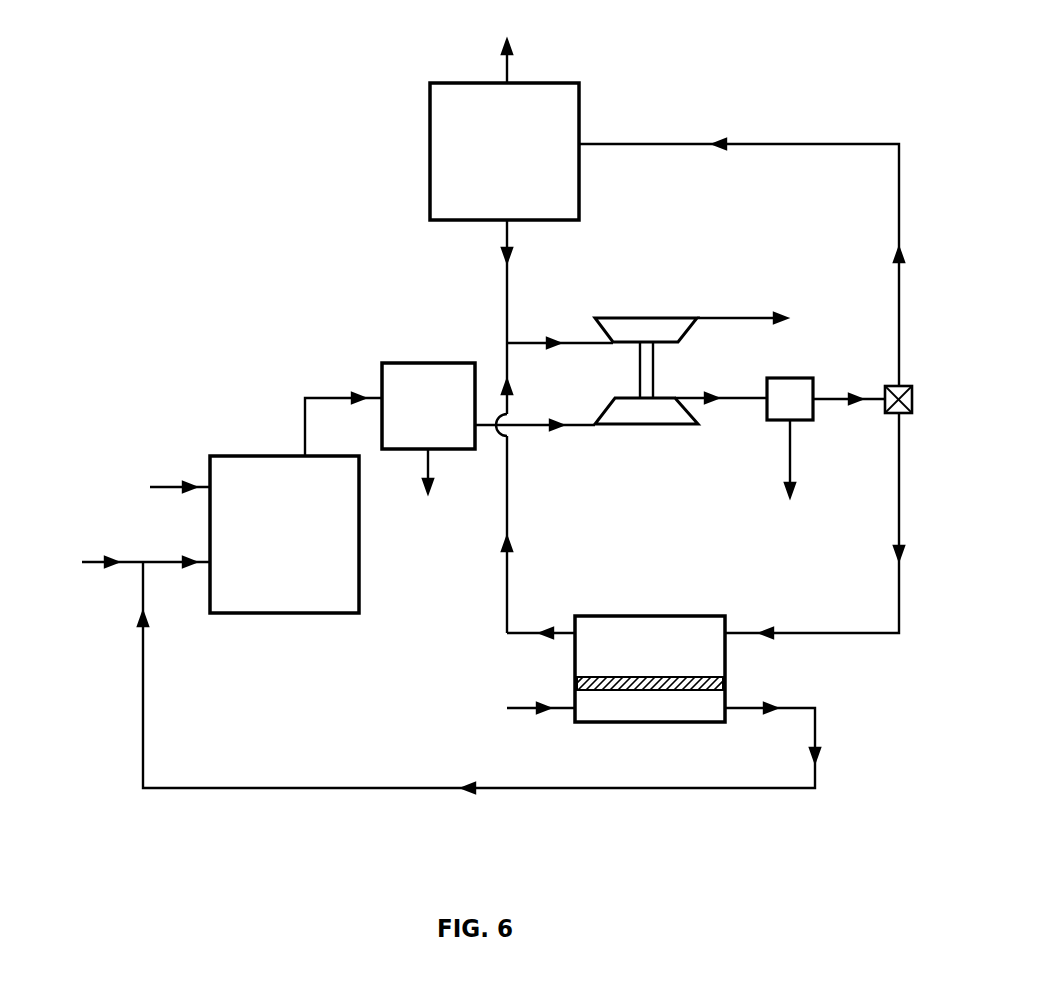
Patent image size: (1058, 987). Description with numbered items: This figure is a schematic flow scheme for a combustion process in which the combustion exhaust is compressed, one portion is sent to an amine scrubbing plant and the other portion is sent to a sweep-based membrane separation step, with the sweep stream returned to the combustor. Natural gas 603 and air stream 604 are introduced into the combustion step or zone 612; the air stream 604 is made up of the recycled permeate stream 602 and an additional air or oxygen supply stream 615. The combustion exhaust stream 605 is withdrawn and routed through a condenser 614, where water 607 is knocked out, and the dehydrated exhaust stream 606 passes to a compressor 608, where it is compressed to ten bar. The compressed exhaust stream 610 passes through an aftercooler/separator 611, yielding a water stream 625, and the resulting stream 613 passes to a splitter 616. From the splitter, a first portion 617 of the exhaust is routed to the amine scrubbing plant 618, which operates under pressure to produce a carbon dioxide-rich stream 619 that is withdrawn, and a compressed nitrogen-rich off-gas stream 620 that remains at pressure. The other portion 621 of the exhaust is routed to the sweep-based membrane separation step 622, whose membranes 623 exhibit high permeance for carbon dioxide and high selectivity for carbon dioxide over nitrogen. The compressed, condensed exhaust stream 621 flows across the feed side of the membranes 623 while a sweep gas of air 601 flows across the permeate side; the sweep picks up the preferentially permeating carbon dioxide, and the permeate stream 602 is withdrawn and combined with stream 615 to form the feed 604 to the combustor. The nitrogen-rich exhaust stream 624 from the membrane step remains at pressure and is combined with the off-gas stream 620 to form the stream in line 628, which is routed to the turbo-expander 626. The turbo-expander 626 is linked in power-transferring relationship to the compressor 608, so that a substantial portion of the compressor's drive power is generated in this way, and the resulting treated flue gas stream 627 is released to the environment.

The sweep gas of air 601 is at (518, 708).
The permeate stream 602 is at (479, 690).
The natural gas 603 is at (157, 488).
The air stream 604 is at (176, 551).
The combustion exhaust stream 605 is at (343, 413).
The dehydrated exhaust stream 606 is at (535, 436).
The water 607 is at (436, 489).
The compressor 608 is at (643, 425).
The compressed exhaust stream 610 is at (721, 387).
The aftercooler/separator 611 is at (773, 421).
The combustion step or zone 612 is at (243, 455).
The stream 613 is at (848, 387).
The condenser 614 is at (436, 362).
The additional air or oxygen supply stream 615 is at (107, 551).
The splitter 616 is at (893, 414).
The first portion of the exhaust stream 617 is at (741, 262).
The amine scrubbing plant 618 is at (430, 158).
The carbon dioxide-rich stream 619 is at (504, 47).
The compressed nitrogen-rich off-gas stream 620 is at (530, 282).
The other portion of the exhaust stream 621 is at (814, 525).
The sweep-based membrane separation step 622 is at (688, 615).
The membranes 623 is at (727, 683).
The nitrogen-rich exhaust stream 624 is at (535, 491).
The water stream 625 is at (793, 475).
The turbo-expander 626 is at (676, 318).
The treated flue gas stream 627 is at (766, 319).
The line 628 is at (560, 333).